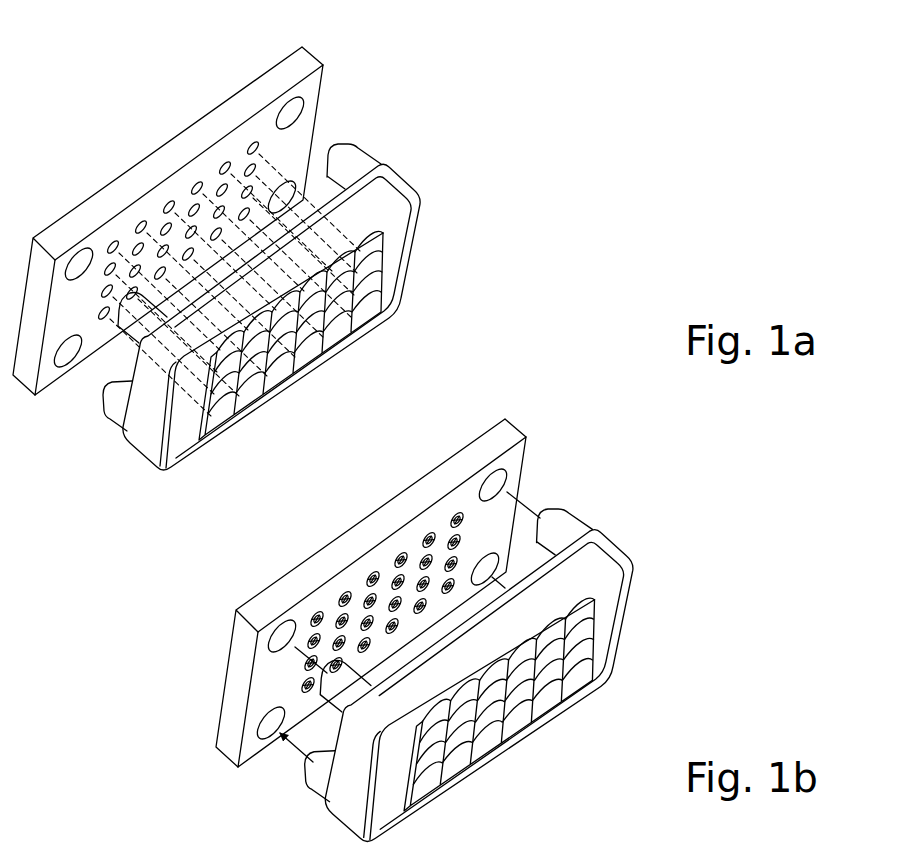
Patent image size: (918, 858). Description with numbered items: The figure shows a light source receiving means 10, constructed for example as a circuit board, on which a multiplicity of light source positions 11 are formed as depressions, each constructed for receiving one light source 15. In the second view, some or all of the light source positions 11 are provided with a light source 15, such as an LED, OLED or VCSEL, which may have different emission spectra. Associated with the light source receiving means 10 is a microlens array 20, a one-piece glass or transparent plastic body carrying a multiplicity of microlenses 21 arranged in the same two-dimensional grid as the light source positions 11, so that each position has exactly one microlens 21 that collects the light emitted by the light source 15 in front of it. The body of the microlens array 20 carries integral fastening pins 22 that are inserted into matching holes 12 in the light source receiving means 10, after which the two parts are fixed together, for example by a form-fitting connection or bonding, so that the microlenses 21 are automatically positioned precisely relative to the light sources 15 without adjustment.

In FIG. 1A, the light source receiving means 10 is at (304, 62).
In FIG. 1B, the light source receiving means 10 is at (379, 568).
In FIG. 1A, the light source positions 11 is at (250, 143).
In FIG. 1A, the holes 12 is at (300, 103).
In FIG. 1B, the light source 15 is at (382, 573).
In FIG. 1A, the microlens array 20 is at (405, 227).
In FIG. 1B, the microlens array 20 is at (500, 675).
In FIG. 1A, the microlenses 21 is at (363, 318).
In FIG. 1B, the microlenses 21 is at (525, 704).
In FIG. 1A, the fastening pins 22 is at (362, 152).